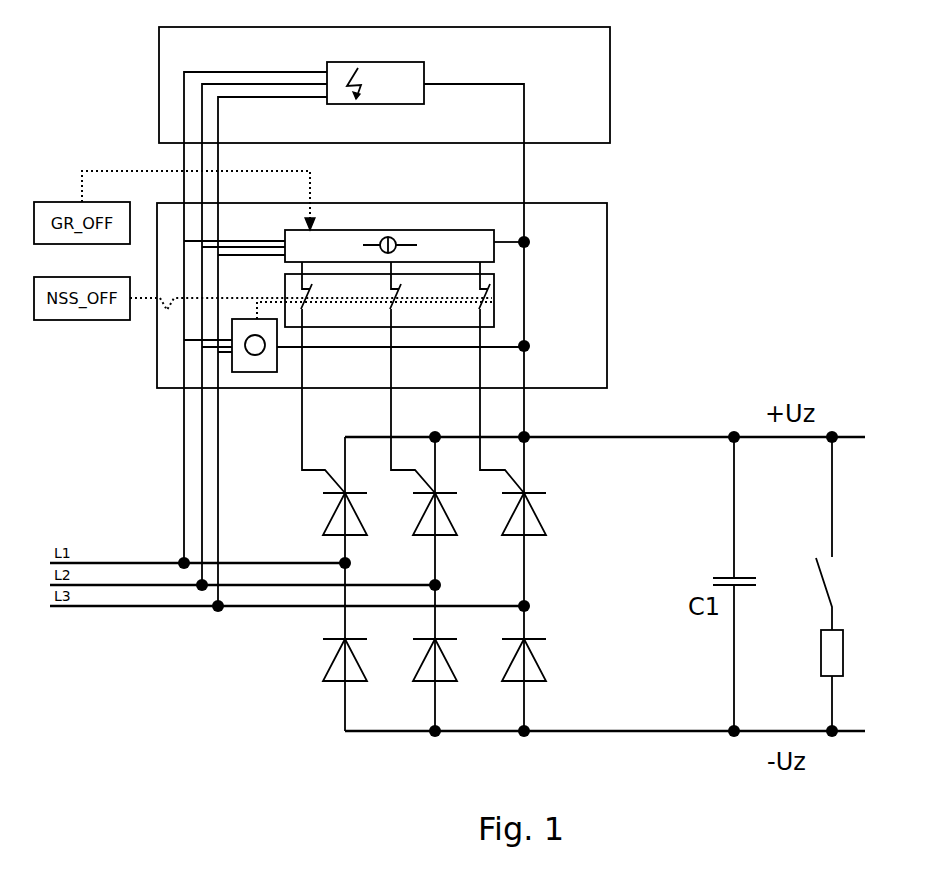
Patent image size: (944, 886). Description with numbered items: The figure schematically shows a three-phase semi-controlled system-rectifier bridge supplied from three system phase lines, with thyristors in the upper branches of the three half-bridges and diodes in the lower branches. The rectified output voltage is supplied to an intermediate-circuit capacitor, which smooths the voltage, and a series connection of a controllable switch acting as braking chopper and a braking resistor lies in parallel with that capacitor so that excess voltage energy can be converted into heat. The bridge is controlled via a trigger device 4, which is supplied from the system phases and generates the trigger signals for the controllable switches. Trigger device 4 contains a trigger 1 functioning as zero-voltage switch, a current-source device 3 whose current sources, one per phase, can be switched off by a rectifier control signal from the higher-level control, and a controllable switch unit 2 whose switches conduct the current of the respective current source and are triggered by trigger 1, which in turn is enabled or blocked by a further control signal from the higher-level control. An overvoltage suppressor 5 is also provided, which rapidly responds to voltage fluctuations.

The trigger 1 is at (243, 373).
The controllable switch unit 2 is at (486, 313).
The current-source device 3 is at (470, 259).
The trigger device 4 is at (607, 367).
The overvoltage suppressor 5 is at (410, 97).